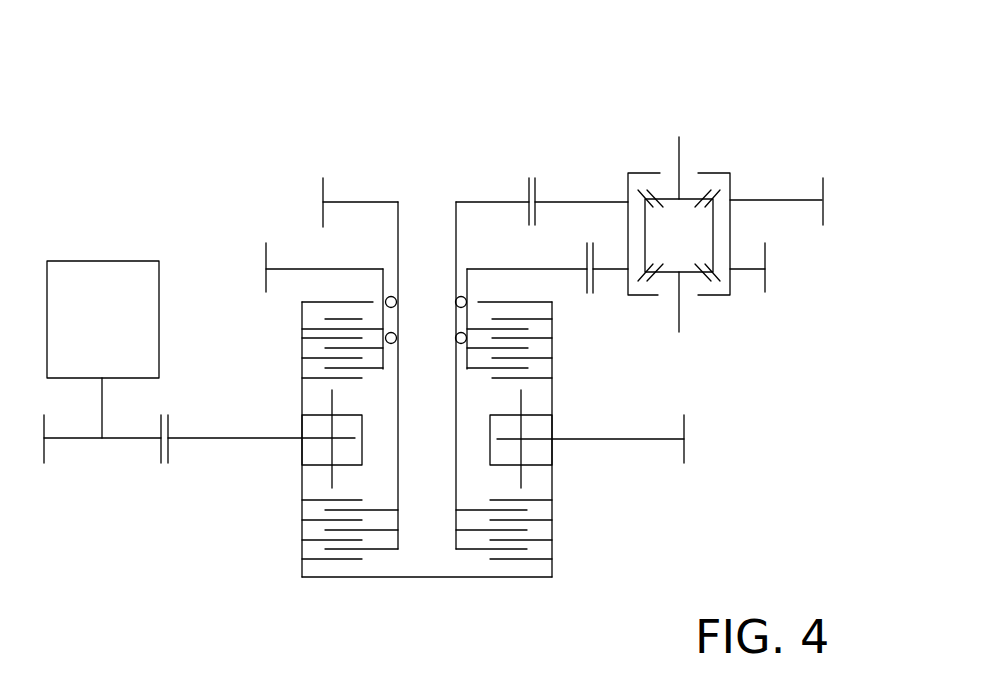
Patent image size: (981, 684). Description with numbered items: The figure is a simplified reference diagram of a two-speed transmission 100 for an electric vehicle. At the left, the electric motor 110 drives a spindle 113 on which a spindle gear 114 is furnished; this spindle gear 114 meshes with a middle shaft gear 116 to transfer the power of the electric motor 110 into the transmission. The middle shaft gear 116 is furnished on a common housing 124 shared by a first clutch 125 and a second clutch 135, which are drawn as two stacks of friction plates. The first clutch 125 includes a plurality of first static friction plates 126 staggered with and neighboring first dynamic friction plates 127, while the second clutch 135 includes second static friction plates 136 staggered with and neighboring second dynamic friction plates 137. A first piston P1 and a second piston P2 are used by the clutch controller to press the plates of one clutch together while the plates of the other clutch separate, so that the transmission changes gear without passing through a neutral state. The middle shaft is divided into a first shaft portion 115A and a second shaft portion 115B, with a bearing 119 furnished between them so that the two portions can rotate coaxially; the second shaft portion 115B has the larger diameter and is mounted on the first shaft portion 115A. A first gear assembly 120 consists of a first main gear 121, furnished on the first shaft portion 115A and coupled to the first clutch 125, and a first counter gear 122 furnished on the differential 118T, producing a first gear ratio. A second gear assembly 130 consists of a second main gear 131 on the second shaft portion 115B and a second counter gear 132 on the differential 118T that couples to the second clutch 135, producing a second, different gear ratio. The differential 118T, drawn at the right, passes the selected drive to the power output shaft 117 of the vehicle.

The two-speed transmission for an electric vehicle 100 is at (75, 77).
The electric motor 110 is at (160, 320).
The spindle 113 is at (104, 406).
The spindle gear 114 is at (68, 438).
The middle shaft gear 116 is at (205, 438).
The first shaft portion 115A is at (398, 223).
The second shaft portion 115B is at (383, 282).
The power output shaft 117 is at (680, 157).
The differential 118T is at (730, 190).
The bearing 119 is at (464, 297).
The first gear assembly 120 is at (428, 117).
The first main gear 121 is at (518, 202).
The first counter gear 122 is at (565, 202).
The common housing 124 is at (302, 529).
The first clutch 125 is at (436, 585).
The first static friction plates 126 is at (384, 552).
The first dynamic friction plates 127 is at (330, 560).
The second gear assembly 130 is at (597, 89).
The second main gear 131 is at (500, 268).
The second counter gear 132 is at (612, 268).
The second clutch 135 is at (557, 336).
The second static friction plates 136 is at (327, 330).
The second dynamic friction plates 137 is at (326, 320).
The first piston P1 is at (522, 477).
The second piston P2 is at (522, 400).